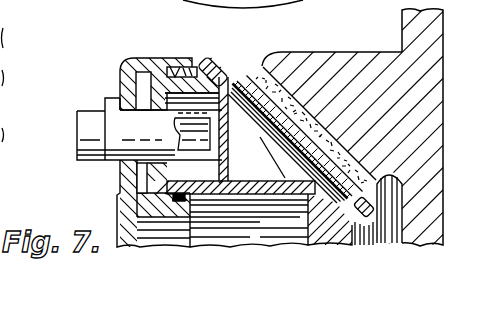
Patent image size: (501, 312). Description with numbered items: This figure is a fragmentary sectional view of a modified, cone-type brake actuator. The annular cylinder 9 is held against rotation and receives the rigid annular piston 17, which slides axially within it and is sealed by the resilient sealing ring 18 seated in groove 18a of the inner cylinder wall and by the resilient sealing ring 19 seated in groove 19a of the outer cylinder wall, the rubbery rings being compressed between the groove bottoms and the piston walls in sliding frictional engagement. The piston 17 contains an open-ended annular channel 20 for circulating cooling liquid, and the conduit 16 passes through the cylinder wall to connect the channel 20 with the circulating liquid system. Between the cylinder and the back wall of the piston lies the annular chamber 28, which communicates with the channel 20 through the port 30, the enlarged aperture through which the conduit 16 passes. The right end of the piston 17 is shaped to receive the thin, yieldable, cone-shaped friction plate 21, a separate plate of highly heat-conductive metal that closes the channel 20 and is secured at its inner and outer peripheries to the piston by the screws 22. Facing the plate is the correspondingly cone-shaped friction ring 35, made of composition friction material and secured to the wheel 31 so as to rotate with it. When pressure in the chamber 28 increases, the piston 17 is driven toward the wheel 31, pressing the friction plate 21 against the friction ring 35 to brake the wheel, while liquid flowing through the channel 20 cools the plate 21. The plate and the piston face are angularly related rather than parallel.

The annular cylinder 9 is at (123, 67).
The conduit 16 is at (88, 118).
The rigid annular piston 17 is at (197, 66).
The resilient sealing ring 18 is at (182, 201).
The groove 18a is at (177, 201).
The resilient sealing ring 19 is at (180, 70).
The groove 19a is at (158, 58).
The annular channel 20 is at (257, 172).
The friction plate 21 is at (257, 70).
The cap screws 22 is at (372, 206).
The annular chamber 28 is at (143, 188).
The port 30 is at (162, 108).
The wheel 31 is at (441, 135).
The friction ring 35 is at (319, 104).